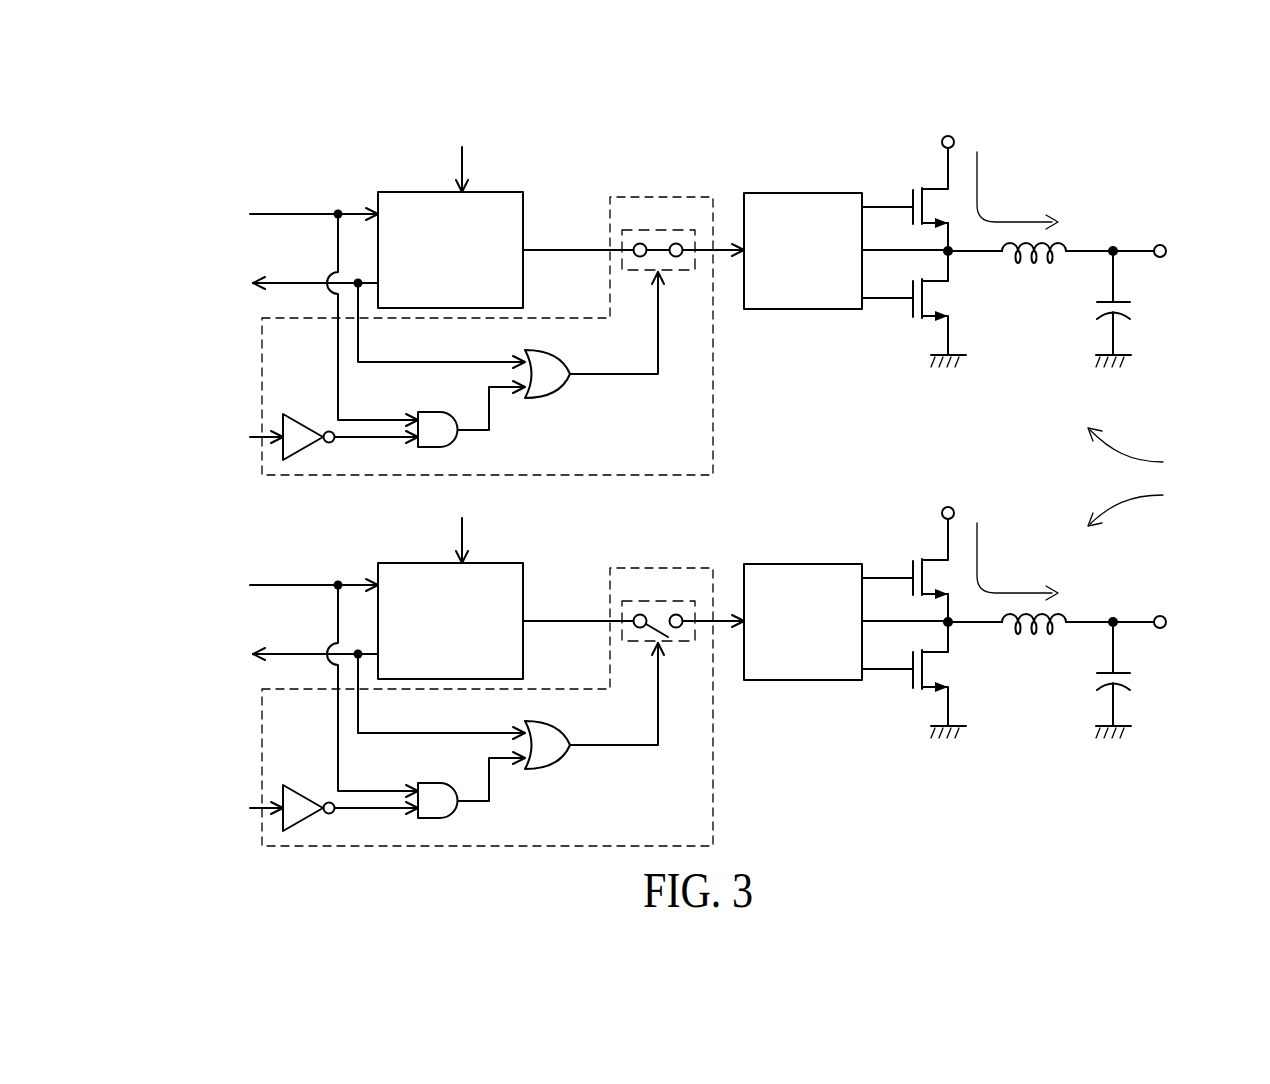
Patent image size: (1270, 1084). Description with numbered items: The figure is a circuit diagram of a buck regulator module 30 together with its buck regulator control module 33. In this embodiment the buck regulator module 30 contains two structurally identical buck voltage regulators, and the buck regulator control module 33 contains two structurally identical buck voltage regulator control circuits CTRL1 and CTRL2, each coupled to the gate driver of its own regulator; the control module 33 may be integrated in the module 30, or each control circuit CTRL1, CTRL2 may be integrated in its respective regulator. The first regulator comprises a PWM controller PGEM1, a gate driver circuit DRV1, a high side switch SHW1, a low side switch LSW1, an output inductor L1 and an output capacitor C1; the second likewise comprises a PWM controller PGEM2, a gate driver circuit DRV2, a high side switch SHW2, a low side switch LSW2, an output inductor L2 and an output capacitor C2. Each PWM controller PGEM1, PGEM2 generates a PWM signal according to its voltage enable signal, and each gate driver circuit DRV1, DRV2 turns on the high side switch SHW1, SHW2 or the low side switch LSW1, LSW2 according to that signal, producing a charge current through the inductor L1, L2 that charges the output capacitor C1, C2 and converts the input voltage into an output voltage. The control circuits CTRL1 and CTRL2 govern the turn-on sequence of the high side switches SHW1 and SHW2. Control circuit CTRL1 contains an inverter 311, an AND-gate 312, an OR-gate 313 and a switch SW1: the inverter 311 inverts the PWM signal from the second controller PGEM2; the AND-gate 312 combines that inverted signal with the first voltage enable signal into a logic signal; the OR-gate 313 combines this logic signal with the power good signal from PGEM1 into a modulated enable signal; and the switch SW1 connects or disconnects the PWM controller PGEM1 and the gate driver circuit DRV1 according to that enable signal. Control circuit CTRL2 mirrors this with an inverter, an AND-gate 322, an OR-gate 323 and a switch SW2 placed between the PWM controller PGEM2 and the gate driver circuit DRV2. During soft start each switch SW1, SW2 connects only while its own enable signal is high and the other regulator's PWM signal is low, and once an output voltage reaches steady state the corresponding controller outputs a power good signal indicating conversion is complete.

The buck regulator module 30 is at (1223, 437).
The buck regulator control module 33 is at (840, 420).
The inverter 311 is at (297, 416).
The AND-gate 312 is at (434, 412).
The OR-gate 313 is at (563, 358).
The AND-gate 322 is at (471, 777).
The OR-gate 323 is at (594, 706).
The PWM controller PGEM1 is at (420, 192).
The PWM controller PGEM2 is at (421, 603).
The switch SW1 is at (663, 229).
The switch SW2 is at (633, 583).
The gate driver circuit DRV1 is at (793, 193).
The gate driver circuit DRV2 is at (803, 662).
The high side switch SHW1 is at (930, 187).
The high side switch SHW2 is at (897, 553).
The low side switch LSW1 is at (930, 318).
The low side switch LSW2 is at (903, 694).
The output inductor L1 is at (1051, 268).
The output inductor L2 is at (1051, 639).
The output capacitor C1 is at (1121, 306).
The output capacitor C2 is at (1121, 677).
The buck voltage regulator control circuit CTRL1 is at (713, 438).
The buck voltage regulator control circuit CTRL2 is at (552, 662).